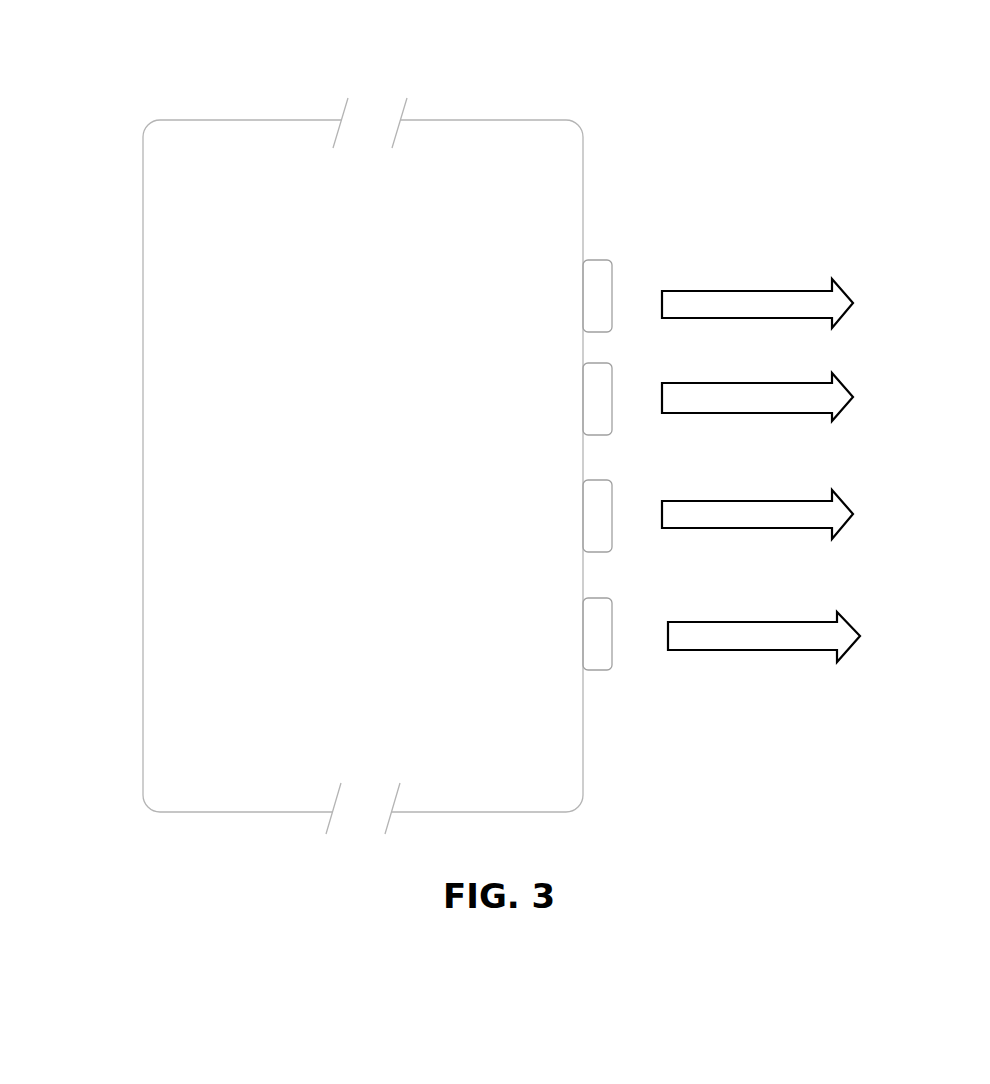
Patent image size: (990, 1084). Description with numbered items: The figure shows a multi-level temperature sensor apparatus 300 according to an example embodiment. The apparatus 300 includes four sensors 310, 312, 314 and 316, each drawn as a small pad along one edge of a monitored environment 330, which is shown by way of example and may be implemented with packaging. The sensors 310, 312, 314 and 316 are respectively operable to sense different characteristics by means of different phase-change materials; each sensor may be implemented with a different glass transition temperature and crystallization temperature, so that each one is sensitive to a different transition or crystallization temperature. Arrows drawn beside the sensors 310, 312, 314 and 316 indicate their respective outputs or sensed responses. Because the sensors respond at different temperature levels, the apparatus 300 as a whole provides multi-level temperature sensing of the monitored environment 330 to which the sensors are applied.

The multi-level temperature sensor apparatus 300 is at (912, 130).
The monitored environment 330 is at (525, 121).
The sensor 310 is at (603, 268).
The sensor 312 is at (603, 407).
The sensor 314 is at (603, 497).
The sensor 316 is at (603, 620).